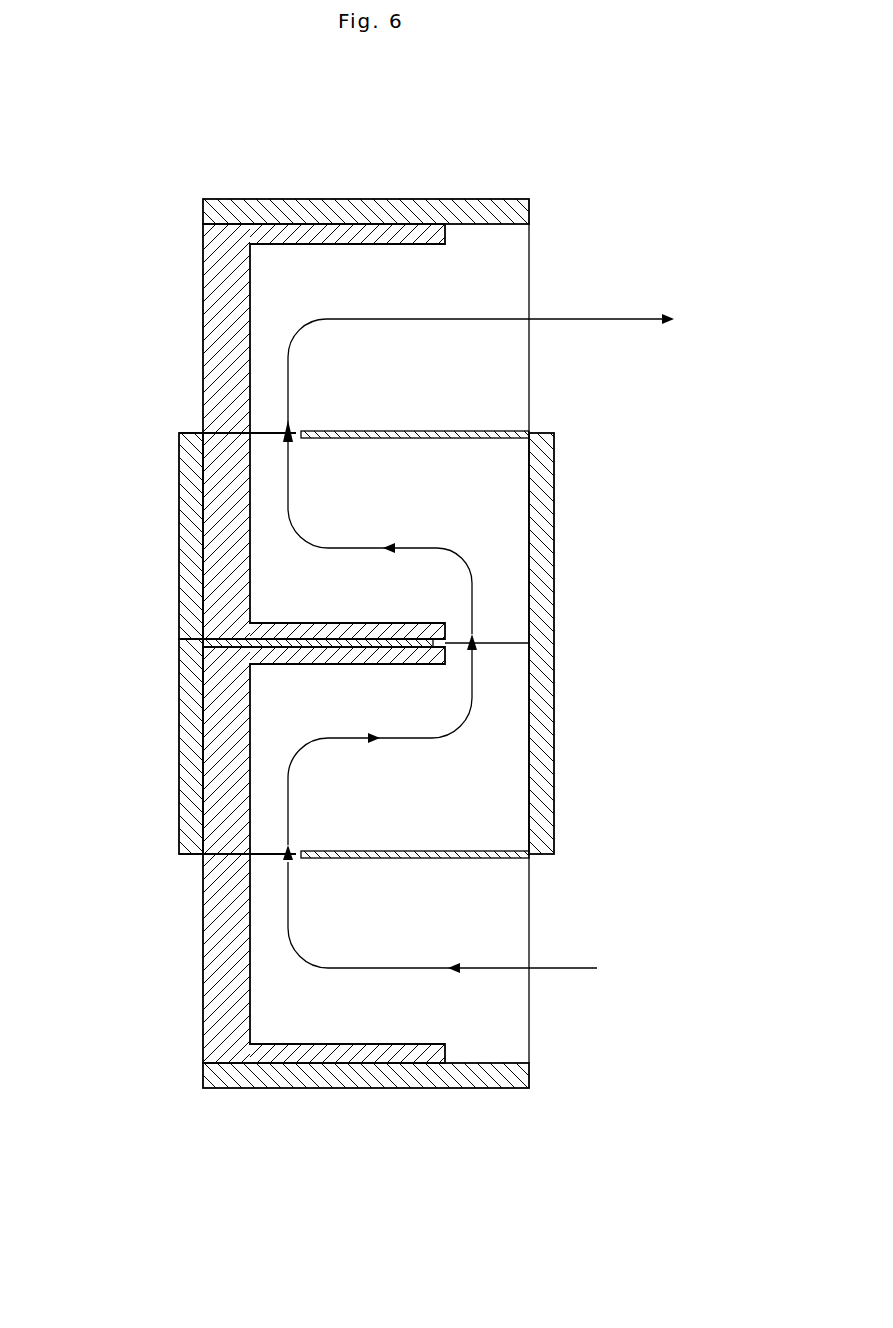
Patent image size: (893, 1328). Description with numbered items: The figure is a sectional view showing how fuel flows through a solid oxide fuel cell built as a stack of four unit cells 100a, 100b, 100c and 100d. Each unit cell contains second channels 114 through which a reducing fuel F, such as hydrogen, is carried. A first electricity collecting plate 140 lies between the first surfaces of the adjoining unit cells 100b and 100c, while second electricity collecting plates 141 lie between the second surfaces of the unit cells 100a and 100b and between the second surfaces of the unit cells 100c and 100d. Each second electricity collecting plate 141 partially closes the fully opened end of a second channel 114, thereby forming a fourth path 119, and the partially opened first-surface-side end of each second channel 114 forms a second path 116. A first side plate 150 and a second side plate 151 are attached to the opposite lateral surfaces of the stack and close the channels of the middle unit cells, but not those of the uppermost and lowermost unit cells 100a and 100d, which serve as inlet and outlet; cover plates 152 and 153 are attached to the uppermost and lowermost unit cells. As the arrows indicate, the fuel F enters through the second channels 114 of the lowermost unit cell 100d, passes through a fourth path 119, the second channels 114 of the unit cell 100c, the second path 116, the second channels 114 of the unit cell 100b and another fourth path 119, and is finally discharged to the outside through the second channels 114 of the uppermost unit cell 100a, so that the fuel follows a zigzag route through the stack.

The unit cell 100a is at (200, 310).
The unit cell 100b is at (200, 535).
The unit cell 100c is at (200, 745).
The unit cell 100d is at (200, 975).
The second channel 114 is at (354, 986).
The second path 116 is at (498, 636).
The fourth path 119 is at (277, 438).
The first electricity collecting plate 140 is at (283, 640).
The second electricity collecting plate 141 is at (490, 432).
The first side plate 150 is at (190, 646).
The second side plate 151 is at (540, 582).
The cover plate 152 is at (490, 206).
The cover plate 153 is at (428, 1078).
The fuel F is at (450, 912).